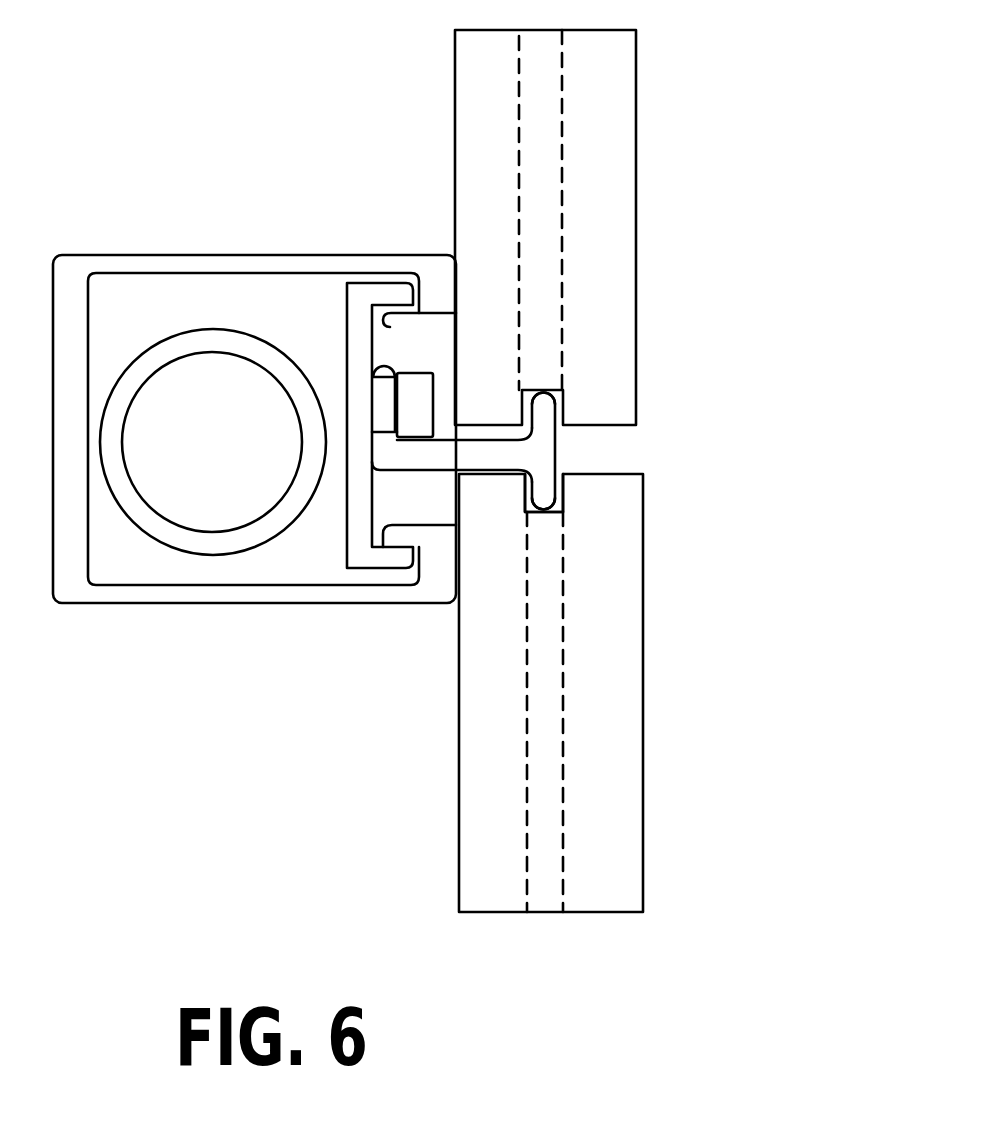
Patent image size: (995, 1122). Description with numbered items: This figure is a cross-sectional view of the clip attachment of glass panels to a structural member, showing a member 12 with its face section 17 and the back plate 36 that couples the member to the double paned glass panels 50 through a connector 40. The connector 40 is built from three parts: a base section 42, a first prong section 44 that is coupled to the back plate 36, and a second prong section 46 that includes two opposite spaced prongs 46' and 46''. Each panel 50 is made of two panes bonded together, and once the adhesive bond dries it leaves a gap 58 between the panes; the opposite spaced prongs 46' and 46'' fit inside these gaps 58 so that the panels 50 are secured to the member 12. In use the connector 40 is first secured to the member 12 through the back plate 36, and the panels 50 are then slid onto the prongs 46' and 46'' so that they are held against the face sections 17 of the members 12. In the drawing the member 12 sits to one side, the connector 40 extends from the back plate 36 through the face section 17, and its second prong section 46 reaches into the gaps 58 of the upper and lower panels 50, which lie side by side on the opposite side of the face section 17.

The member 12 is at (92, 243).
The back plate 36 is at (334, 362).
The first prong section 44 is at (388, 357).
The face section 17 is at (439, 285).
The connector 40 is at (413, 457).
The base section 42 is at (479, 458).
The second prong section 46 is at (683, 451).
The prong 46' is at (645, 412).
The prong 46'' is at (659, 506).
The double paned glass panel 50 is at (622, 205).
The gap 58 is at (527, 513).